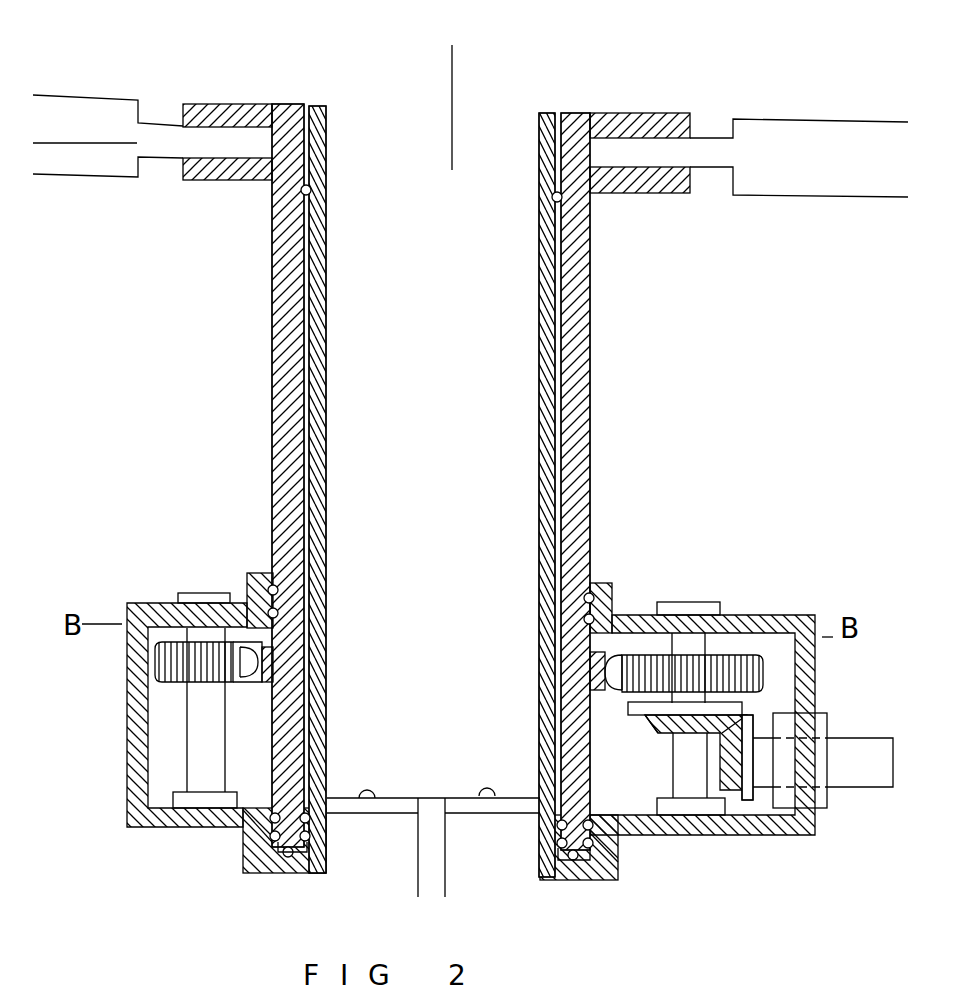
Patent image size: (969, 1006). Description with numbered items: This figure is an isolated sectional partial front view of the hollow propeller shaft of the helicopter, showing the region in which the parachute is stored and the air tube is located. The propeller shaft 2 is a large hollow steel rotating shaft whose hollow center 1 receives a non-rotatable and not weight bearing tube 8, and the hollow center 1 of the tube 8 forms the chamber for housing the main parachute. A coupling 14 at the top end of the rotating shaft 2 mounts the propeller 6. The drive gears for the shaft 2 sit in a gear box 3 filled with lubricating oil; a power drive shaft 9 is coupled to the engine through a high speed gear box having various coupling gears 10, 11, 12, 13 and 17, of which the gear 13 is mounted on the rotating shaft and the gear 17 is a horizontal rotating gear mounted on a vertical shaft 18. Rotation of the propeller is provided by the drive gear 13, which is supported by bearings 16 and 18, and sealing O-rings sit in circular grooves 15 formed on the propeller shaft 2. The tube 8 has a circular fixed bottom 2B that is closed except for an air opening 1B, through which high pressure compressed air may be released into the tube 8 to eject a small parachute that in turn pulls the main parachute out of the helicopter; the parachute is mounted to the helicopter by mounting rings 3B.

The hollow center 1 is at (462, 93).
The propeller shaft 2 is at (289, 143).
The gear box 3 is at (137, 705).
The propeller 6 is at (799, 155).
The tube 8 is at (546, 113).
The power drive shaft 9 is at (857, 757).
The coupling gear 10 is at (748, 795).
The coupling gear 11 is at (646, 718).
The coupling gear 12 is at (738, 652).
The drive gear 13 is at (253, 663).
The coupling 14 is at (224, 180).
The circular grooves 15 is at (273, 590).
The bearing 16 is at (288, 857).
The horizontal rotating gear 17 is at (167, 603).
The vertical shaft 18 is at (198, 757).
The air opening 1B is at (435, 892).
The circular fixed bottom 2B is at (497, 808).
The mounting rings 3B is at (363, 785).